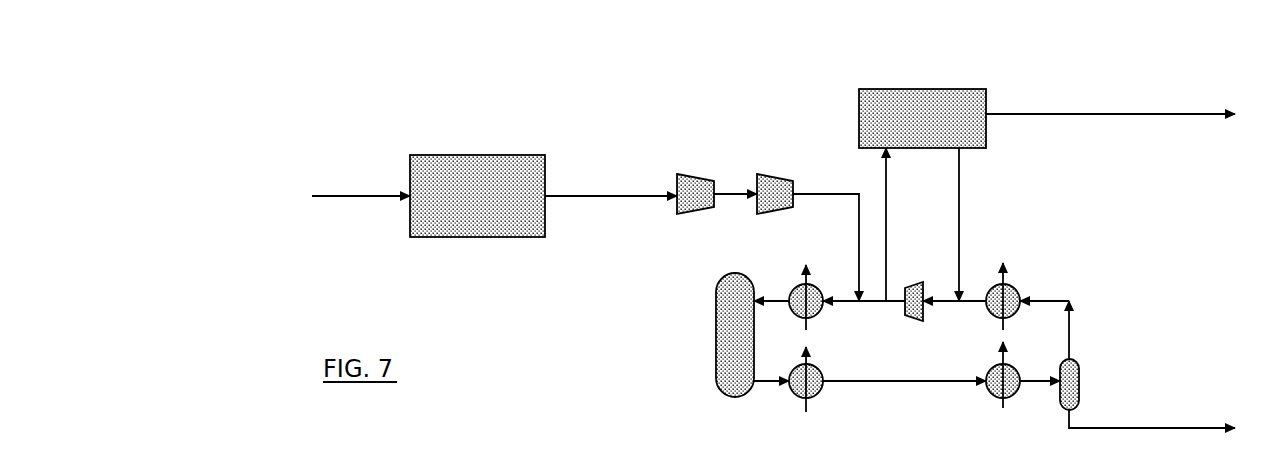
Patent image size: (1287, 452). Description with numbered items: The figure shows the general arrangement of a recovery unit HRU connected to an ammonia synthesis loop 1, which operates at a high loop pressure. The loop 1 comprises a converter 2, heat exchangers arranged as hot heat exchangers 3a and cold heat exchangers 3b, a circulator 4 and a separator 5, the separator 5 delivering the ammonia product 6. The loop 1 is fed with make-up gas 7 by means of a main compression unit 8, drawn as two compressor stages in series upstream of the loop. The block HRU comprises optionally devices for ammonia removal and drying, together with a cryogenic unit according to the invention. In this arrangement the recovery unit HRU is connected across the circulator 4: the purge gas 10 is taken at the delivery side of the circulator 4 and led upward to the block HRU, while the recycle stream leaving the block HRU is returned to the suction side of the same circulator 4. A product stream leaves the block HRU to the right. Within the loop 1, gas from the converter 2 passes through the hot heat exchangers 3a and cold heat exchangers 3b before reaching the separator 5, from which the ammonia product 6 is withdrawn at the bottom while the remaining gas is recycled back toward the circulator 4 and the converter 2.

The synthesis loop 1 is at (1113, 221).
The converter 2 is at (728, 338).
The hot heat exchangers 3a is at (815, 304).
The cold heat exchangers 3b is at (1000, 313).
The circulator 4 is at (913, 290).
The separator 5 is at (1072, 382).
The ammonia product 6 is at (1166, 426).
The make-up gas 7 is at (597, 197).
The main compression unit 8 is at (737, 155).
The purge gas 10 is at (886, 192).
The recovery unit HRU is at (963, 89).